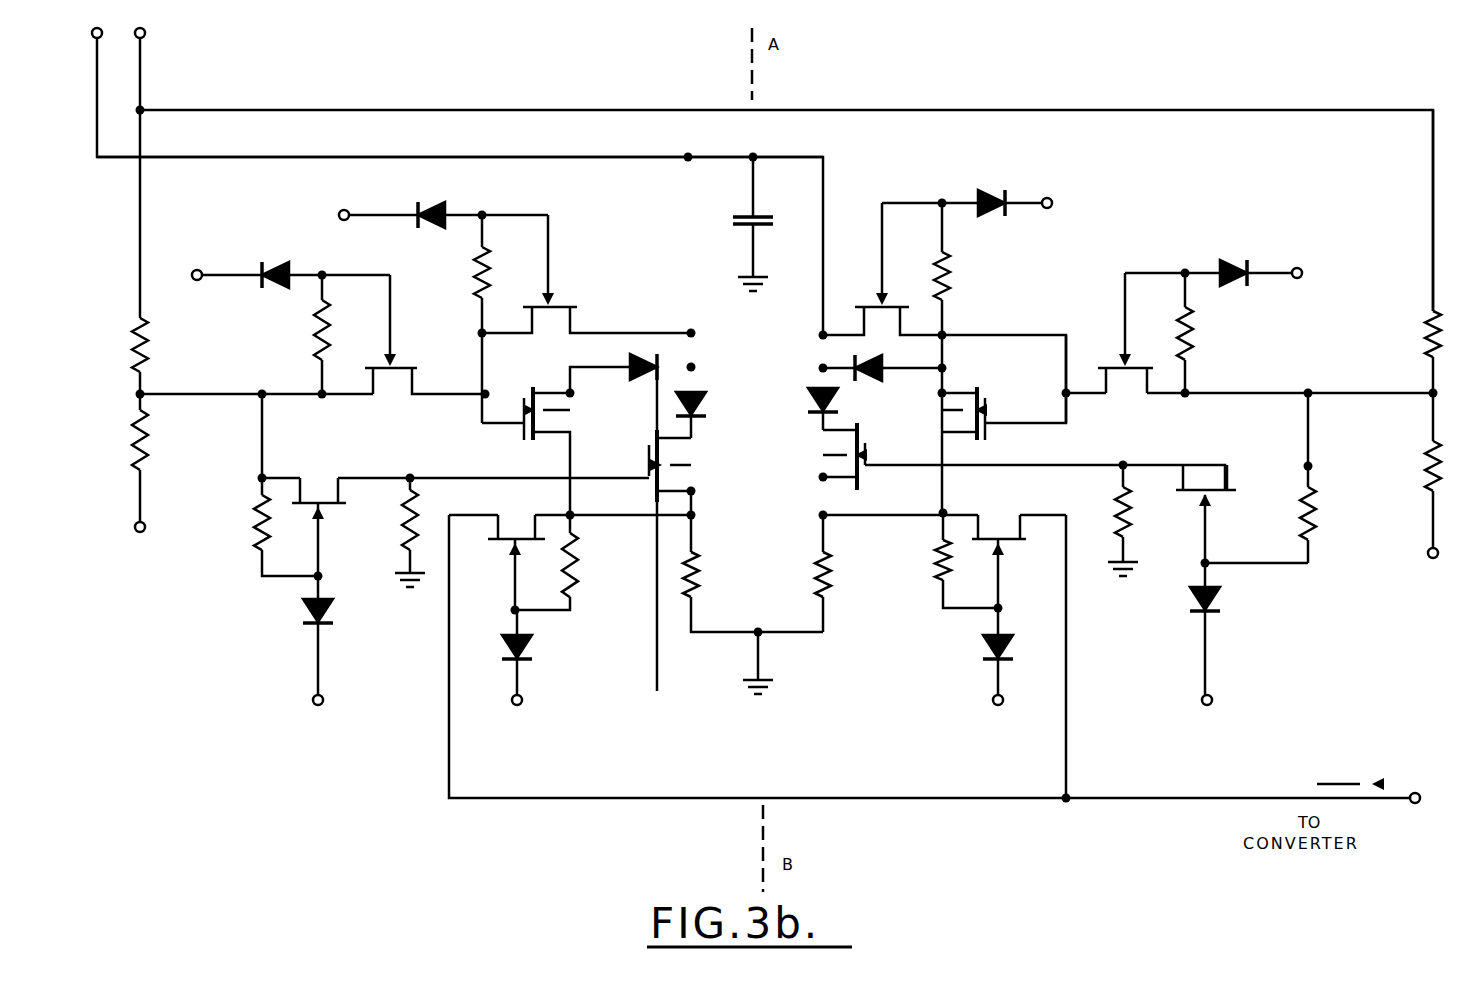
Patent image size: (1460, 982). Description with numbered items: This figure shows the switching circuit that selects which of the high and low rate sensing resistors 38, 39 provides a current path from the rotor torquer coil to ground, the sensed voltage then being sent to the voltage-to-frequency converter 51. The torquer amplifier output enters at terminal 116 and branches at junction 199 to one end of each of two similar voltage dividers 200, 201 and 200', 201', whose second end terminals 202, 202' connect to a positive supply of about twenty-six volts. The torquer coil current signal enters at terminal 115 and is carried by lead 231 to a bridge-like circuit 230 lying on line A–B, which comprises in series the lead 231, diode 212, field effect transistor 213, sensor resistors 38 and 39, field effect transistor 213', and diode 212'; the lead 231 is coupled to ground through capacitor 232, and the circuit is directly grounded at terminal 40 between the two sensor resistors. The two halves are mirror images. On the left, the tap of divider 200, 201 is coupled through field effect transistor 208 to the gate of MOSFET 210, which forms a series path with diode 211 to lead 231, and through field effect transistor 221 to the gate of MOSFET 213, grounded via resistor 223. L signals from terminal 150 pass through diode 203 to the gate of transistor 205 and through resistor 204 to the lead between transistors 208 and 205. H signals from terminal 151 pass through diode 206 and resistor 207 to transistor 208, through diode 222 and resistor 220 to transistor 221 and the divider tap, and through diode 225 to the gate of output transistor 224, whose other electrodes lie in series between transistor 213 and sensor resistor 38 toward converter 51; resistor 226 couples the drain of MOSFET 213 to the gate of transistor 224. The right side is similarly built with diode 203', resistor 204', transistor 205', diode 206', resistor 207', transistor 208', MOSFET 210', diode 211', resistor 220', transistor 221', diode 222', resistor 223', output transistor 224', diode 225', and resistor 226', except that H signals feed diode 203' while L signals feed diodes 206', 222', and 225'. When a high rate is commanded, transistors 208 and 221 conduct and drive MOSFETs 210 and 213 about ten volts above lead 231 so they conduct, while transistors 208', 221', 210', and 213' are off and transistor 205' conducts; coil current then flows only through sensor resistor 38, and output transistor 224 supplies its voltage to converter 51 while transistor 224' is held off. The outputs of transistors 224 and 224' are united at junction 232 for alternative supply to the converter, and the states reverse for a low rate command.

The terminal 115 is at (92, 37).
The terminal 116 is at (146, 36).
The branch point 199 is at (144, 107).
The lead 231 is at (645, 156).
The terminal 150 is at (344, 210).
The terminal 151 is at (197, 270).
The voltage divider resistor 200 is at (102, 357).
The voltage divider resistor 201 is at (102, 440).
The end terminal 202 is at (142, 556).
The diode 203 is at (448, 198).
The resistor 204 is at (446, 323).
The transistor 205 is at (578, 289).
The diode 206 is at (296, 255).
The resistor 207 is at (282, 349).
The field effect transistor 208 is at (425, 392).
The MOSFET 210 is at (515, 419).
The diode 211 is at (627, 355).
The diode 212 is at (718, 391).
The field effect transistor 213 is at (631, 475).
The resistor 220 is at (226, 522).
The field effect transistor 221 is at (302, 514).
The diode 222 is at (276, 614).
The resistor 223 is at (375, 531).
The output field-effect transistor 224 is at (516, 548).
The diode 225 is at (549, 643).
The resistor 226 is at (598, 563).
The bridge-like circuit 230 is at (778, 332).
The capacitor 232 is at (745, 214).
The high rate sensing resistor 38 is at (700, 556).
The low rate sensing resistor 39 is at (818, 586).
The ground terminal 40 is at (762, 638).
The voltage-to-frequency converter 51 is at (1330, 876).
The voltage divider resistor 200' is at (1386, 354).
The voltage divider resistor 201' is at (1393, 454).
The end terminal 202' is at (1409, 579).
The diode 203' is at (995, 190).
The resistor 204' is at (980, 325).
The transistor 205' is at (883, 295).
The diode 206' is at (1220, 250).
The resistor 207' is at (1220, 333).
The field effect transistor 208' is at (1127, 353).
The MOSFET 210' is at (1023, 393).
The diode 211' is at (876, 388).
The diode 212' is at (786, 417).
The field effect transistor 213' is at (875, 462).
The resistor 220' is at (1348, 464).
The field effect transistor 221' is at (1178, 494).
The diode 222' is at (1249, 608).
The resistor 223' is at (1149, 531).
The output field-effect transistor 224' is at (983, 543).
The diode 225' is at (948, 642).
The resistor 226' is at (906, 560).